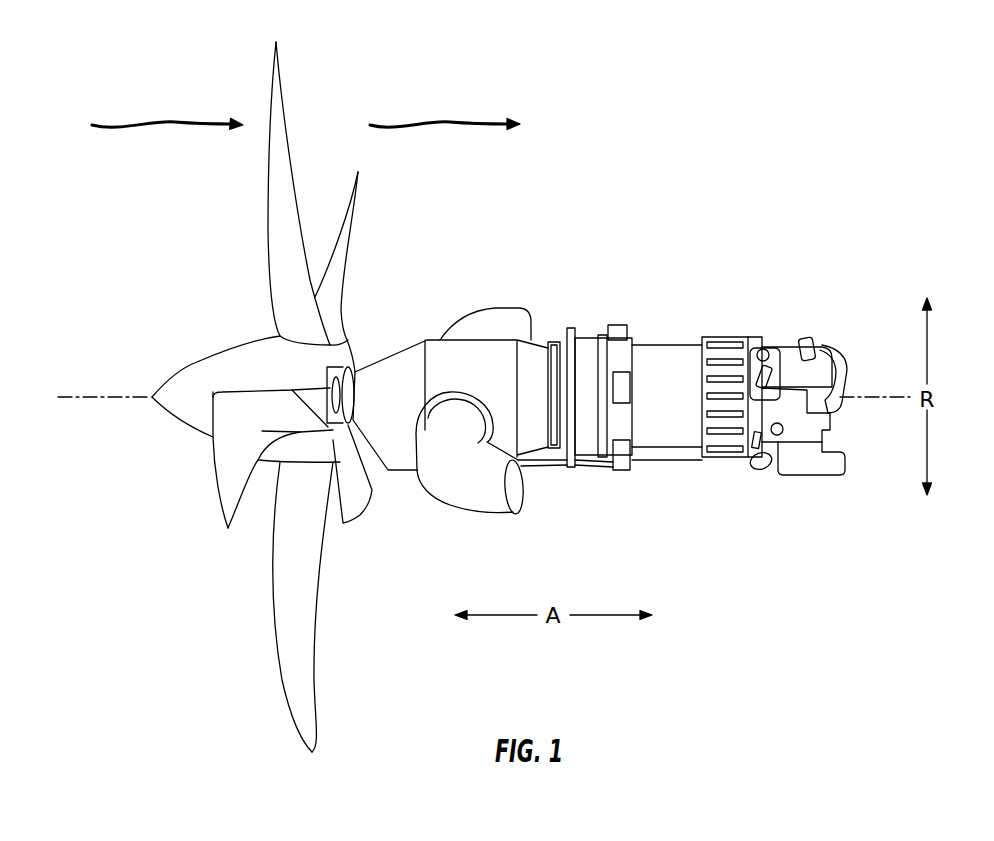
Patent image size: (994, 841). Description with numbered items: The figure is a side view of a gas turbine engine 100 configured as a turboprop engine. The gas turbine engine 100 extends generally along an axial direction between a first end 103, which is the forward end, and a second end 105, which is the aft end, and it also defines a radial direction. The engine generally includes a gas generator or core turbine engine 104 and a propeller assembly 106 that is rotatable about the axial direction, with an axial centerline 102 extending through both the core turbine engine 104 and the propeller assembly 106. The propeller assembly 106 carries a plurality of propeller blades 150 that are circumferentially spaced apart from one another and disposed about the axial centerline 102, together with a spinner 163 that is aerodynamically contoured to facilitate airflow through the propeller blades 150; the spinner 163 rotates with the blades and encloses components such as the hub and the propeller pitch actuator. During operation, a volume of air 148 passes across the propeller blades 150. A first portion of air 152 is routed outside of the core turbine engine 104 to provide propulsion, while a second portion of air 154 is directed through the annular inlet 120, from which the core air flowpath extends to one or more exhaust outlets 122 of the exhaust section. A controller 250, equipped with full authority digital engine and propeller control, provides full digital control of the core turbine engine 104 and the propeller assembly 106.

The gas turbine engine 100 is at (485, 222).
The axial centerline 102 is at (103, 397).
The first end 103 is at (170, 515).
The core turbine engine 104 is at (645, 292).
The second end 105 is at (838, 508).
The propeller assembly 106 is at (216, 290).
The annular inlet 120 is at (688, 424).
The exhaust outlets 122 is at (478, 317).
The volume of air 148 is at (161, 123).
The propeller blades 150 is at (280, 695).
The first portion of air 152 is at (437, 122).
The second portion of air 154 is at (678, 277).
The spinner 163 is at (197, 362).
The controller 250 is at (798, 465).